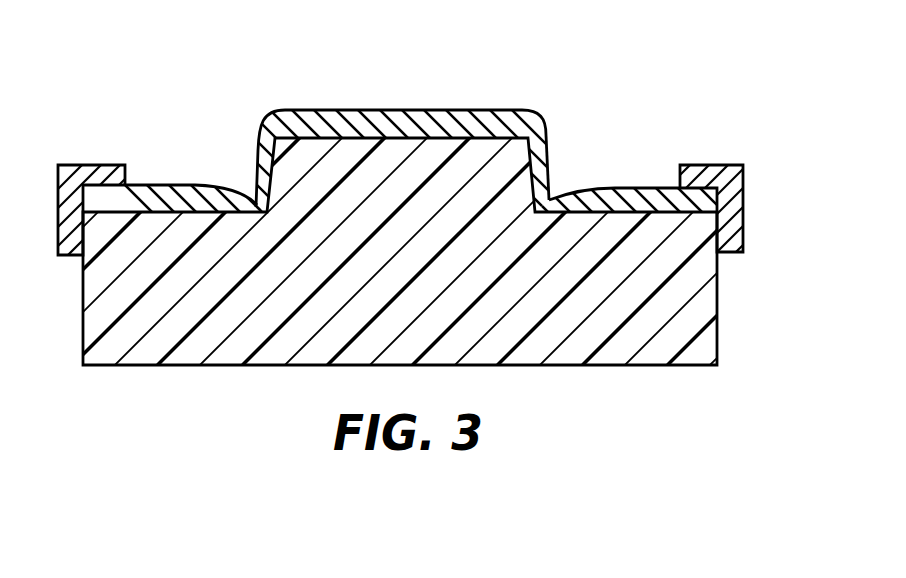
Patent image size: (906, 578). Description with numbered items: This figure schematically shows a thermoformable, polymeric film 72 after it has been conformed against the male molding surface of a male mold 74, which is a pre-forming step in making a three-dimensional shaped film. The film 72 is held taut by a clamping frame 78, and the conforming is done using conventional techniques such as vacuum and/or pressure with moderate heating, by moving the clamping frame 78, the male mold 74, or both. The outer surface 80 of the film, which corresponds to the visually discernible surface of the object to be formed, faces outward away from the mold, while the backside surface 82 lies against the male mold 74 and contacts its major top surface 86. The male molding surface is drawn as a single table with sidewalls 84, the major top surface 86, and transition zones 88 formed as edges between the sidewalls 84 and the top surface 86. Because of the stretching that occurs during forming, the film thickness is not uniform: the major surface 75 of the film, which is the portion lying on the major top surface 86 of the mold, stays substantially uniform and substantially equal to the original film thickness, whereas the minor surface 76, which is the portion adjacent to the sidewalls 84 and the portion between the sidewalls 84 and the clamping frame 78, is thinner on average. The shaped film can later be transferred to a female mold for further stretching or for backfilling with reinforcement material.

The thermoformable film 72 is at (647, 192).
The male mold 74 is at (705, 320).
The major surface of the film 75 is at (323, 126).
The minor surface of the film 76 is at (265, 162).
The clamping frame 78 is at (728, 192).
The outer surface of the film 80 is at (155, 182).
The backside surface of the film 82 is at (173, 200).
The sidewalls 84 is at (549, 170).
The major top surface of the male mold 86 is at (452, 130).
The transition zones 88 is at (545, 135).